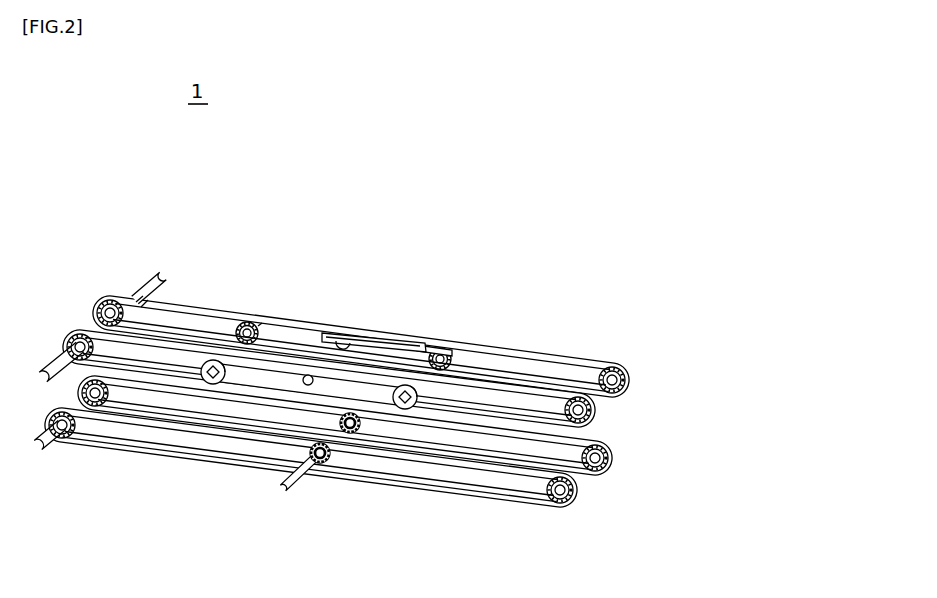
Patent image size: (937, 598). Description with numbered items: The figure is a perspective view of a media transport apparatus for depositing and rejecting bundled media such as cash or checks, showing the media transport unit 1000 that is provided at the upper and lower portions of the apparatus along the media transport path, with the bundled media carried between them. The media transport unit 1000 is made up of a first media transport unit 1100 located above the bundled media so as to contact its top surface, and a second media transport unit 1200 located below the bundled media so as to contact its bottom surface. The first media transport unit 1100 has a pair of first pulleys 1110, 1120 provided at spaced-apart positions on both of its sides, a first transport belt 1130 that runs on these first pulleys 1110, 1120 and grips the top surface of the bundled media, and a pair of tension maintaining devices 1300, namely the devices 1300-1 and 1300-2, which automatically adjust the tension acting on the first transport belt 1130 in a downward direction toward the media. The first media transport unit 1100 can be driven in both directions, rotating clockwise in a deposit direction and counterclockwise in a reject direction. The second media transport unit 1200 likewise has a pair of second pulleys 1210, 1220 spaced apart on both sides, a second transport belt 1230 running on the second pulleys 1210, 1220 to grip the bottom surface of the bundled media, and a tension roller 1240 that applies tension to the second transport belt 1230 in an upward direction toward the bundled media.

The media transport unit 1000 is at (422, 366).
The first media transport unit 1100 is at (389, 302).
The first pulley 1110 is at (543, 393).
The first pulley 1120 is at (132, 310).
The first transport belt 1130 is at (507, 380).
The second media transport unit 1200 is at (379, 479).
The second pulley 1210 is at (537, 486).
The second pulley 1220 is at (83, 422).
The second transport belt 1230 is at (257, 465).
The tension roller 1240 is at (372, 422).
The tension maintaining device 1300 is at (258, 192).
The tension maintaining device 1300-1 is at (306, 358).
The tension maintaining device 1300-2 is at (356, 325).